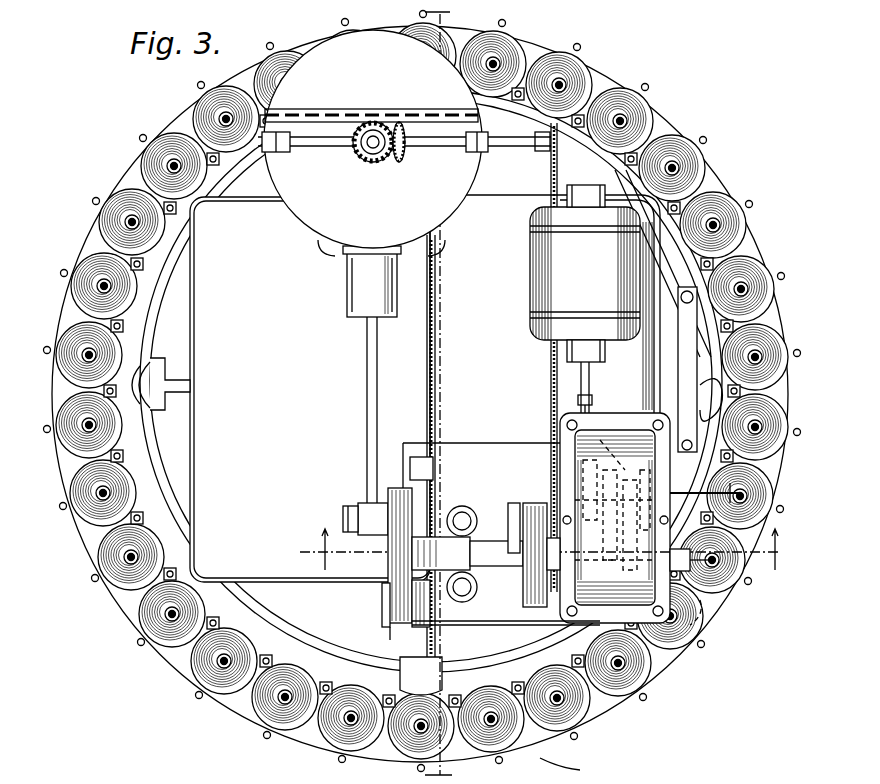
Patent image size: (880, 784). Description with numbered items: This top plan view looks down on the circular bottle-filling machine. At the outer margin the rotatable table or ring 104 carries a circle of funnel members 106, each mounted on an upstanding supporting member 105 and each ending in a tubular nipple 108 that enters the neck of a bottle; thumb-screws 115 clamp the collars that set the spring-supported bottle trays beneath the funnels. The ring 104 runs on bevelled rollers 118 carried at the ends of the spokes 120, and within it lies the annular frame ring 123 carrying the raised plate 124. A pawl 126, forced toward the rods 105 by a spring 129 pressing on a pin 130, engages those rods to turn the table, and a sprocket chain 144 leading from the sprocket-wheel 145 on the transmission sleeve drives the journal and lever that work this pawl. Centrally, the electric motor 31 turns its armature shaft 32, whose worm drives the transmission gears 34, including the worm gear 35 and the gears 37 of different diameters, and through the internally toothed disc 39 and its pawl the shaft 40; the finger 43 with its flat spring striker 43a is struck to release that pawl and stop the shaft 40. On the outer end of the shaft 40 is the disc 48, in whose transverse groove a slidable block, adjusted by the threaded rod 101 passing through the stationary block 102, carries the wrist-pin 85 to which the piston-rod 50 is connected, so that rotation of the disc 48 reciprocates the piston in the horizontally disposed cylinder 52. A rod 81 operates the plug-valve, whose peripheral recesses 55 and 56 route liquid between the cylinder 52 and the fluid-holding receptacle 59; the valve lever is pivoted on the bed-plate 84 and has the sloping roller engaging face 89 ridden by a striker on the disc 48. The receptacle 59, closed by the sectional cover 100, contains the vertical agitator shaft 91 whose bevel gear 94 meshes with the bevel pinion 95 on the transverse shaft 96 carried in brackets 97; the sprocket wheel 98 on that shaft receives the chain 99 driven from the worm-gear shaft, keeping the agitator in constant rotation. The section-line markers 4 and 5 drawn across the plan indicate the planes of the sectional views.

The electric motor 31 is at (530, 283).
The armature shaft 32 is at (590, 385).
The transmission gears 34 is at (635, 440).
The worm gear 35 is at (586, 430).
The gears 37 is at (700, 605).
The internally toothed disc 39 is at (532, 608).
The shaft 40 is at (487, 593).
The finger 43 is at (466, 507).
The flat spring striker 43a is at (513, 503).
The disc 48 is at (395, 488).
The piston-rod 50 is at (367, 400).
The cylinder 52 is at (347, 312).
The recess 55 is at (560, 771).
The recess 56 is at (760, 500).
The fluid-holding receptacle 59 is at (327, 40).
The rod 81 is at (436, 405).
The bed-plate 84 is at (305, 582).
The wrist-pin 85 is at (343, 516).
The roller engaging face 89 is at (433, 465).
The agitator shaft 91 is at (360, 160).
The bevel gear 94 is at (375, 122).
The bevel pinion 95 is at (400, 162).
The transverse shaft 96 is at (333, 148).
The brackets 97 is at (280, 153).
The sprocket wheel 98 is at (545, 153).
The chain 99 is at (550, 185).
The sectional cover 100 is at (358, 42).
The threaded rod 101 is at (388, 582).
The stationary block 102 is at (382, 618).
The ring 104 is at (660, 117).
The supporting members 105 is at (105, 258).
The funnel members 106 is at (145, 168).
The nipple 108 is at (131, 556).
The thumb-screw 115 is at (200, 85).
The bevelled rollers 118 is at (135, 410).
The spokes 120 is at (178, 382).
The annular frame ring 123 is at (157, 333).
The plate 124 is at (680, 345).
The pawl 126 is at (755, 427).
The spring 129 is at (594, 393).
The pin 130 is at (722, 392).
The sprocket chain 144 is at (728, 568).
The sprocket-wheel 145 is at (722, 575).
The section line 4- 4 is at (545, 549).
The section line 5- 5 is at (445, 393).